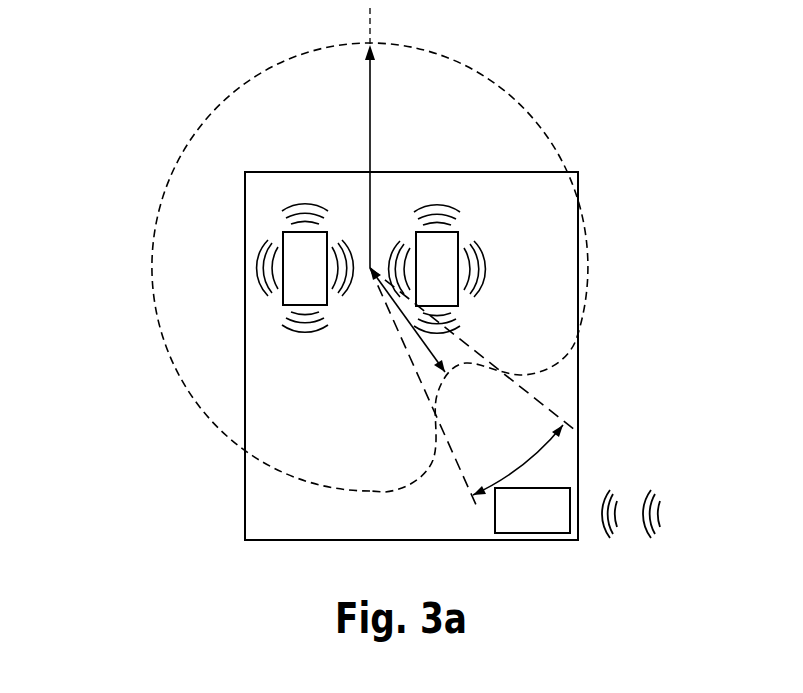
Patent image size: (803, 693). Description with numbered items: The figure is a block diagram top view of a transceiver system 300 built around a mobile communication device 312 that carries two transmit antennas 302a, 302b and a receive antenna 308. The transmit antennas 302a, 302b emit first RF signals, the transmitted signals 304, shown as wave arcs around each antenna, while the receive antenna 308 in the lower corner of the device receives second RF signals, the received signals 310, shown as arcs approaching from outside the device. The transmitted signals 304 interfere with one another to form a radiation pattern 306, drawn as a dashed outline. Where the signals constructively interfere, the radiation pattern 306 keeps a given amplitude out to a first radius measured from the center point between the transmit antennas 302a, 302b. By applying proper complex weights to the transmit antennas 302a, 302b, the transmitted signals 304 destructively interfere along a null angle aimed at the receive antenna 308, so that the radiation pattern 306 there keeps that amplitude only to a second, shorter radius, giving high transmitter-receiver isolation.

The transceiver system 300 is at (100, 60).
The transmit antenna 302a is at (306, 292).
The transmit antenna 302b is at (437, 269).
The transmitted signals 304 is at (292, 348).
The radiation pattern 306 is at (545, 105).
The receive antenna 308 is at (532, 510).
The received signals 310 is at (677, 472).
The mobile communication device 312 is at (245, 525).